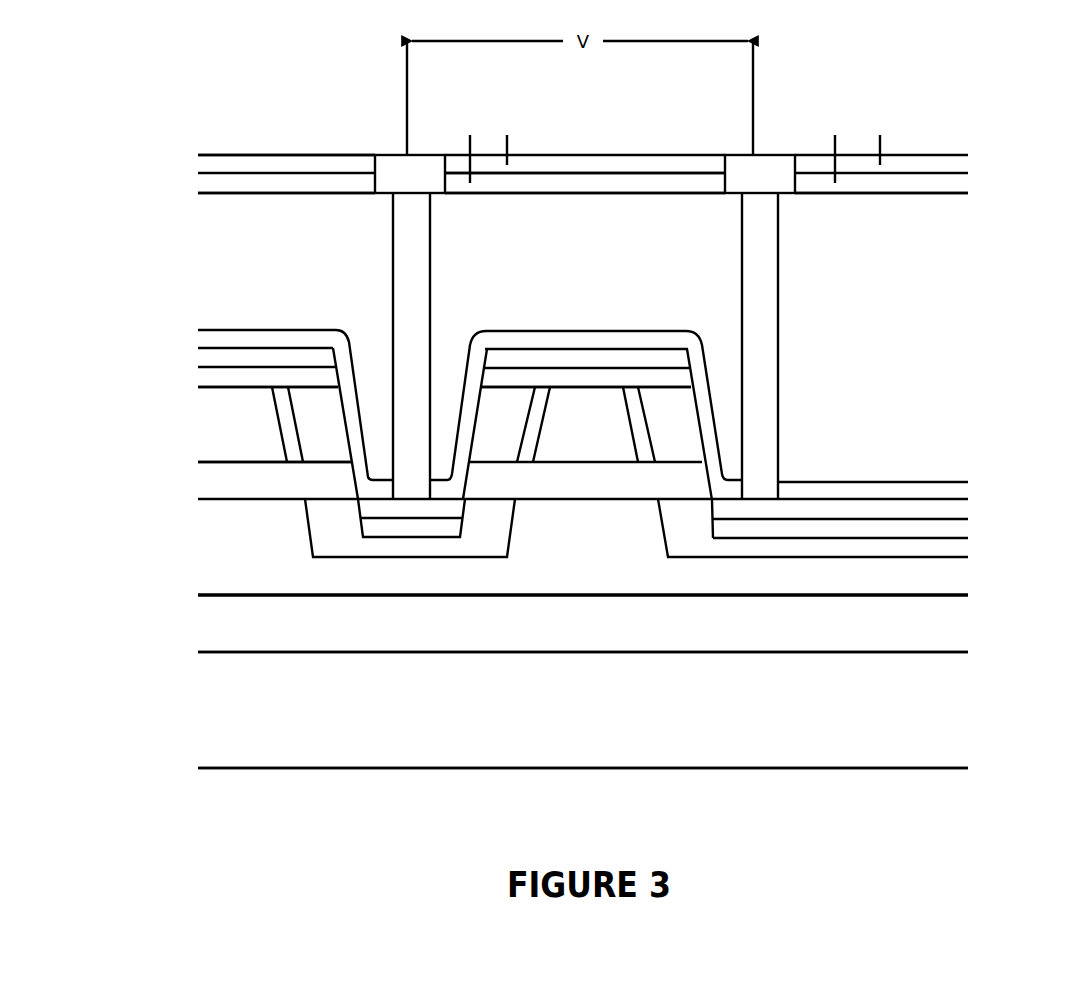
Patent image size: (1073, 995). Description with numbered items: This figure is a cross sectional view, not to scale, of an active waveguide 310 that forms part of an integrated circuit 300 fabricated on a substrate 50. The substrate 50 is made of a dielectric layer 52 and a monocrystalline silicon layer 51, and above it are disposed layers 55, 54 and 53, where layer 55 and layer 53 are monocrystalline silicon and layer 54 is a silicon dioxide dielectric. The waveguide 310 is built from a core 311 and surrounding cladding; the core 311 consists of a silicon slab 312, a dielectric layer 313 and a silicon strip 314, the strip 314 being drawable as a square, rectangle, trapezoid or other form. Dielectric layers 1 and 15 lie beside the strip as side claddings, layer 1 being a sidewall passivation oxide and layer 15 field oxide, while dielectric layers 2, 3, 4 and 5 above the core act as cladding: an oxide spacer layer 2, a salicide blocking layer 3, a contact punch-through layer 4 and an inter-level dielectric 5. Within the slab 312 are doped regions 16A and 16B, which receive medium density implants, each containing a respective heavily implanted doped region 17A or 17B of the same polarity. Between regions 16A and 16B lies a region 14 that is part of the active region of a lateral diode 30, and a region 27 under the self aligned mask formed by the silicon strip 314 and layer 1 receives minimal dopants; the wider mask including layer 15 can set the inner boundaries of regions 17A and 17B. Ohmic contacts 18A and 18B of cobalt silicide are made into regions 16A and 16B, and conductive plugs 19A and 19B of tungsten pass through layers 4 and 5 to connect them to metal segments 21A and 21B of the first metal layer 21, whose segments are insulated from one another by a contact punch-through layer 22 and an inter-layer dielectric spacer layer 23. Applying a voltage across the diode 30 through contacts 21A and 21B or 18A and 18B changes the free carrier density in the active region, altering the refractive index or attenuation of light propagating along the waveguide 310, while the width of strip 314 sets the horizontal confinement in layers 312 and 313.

The dielectric layer 1 is at (293, 453).
The oxide spacer layer 2 is at (188, 378).
The salicide blocking layer 3 is at (188, 352).
The contact punch-through layer 4 is at (188, 330).
The inter-level dielectric 5 is at (205, 236).
The region 14 is at (560, 573).
The field oxide 15 is at (307, 426).
The doped region 16A is at (350, 543).
The doped region 16B is at (980, 553).
The doped region 17A is at (407, 528).
The doped region 17B is at (980, 532).
The ohmic contact 18A is at (428, 508).
The ohmic contact 18B is at (980, 511).
The conductive plug 19A is at (403, 232).
The conductive plug 19B is at (762, 222).
The first metal layer 21 is at (233, 146).
The metal segment 21A is at (410, 174).
The metal segment 21B is at (760, 174).
The contact punch-through layer 22 is at (188, 183).
The inter-layer dielectric spacer layer 23 is at (188, 160).
The region 27 is at (621, 572).
The lateral diode 30 is at (578, 140).
The substrate 50 is at (194, 617).
The monocrystalline silicon layer 51 is at (583, 735).
The dielectric layer 52 is at (204, 639).
The layer 53 is at (204, 559).
The dielectric layer 54 is at (204, 489).
The layer 55 is at (210, 425).
The integrated circuit 300 is at (345, 780).
The active waveguide 310 is at (586, 657).
The core 311 is at (590, 318).
The silicon slab 312 is at (570, 544).
The dielectric layer 313 is at (570, 491).
The silicon strip 314 is at (569, 434).